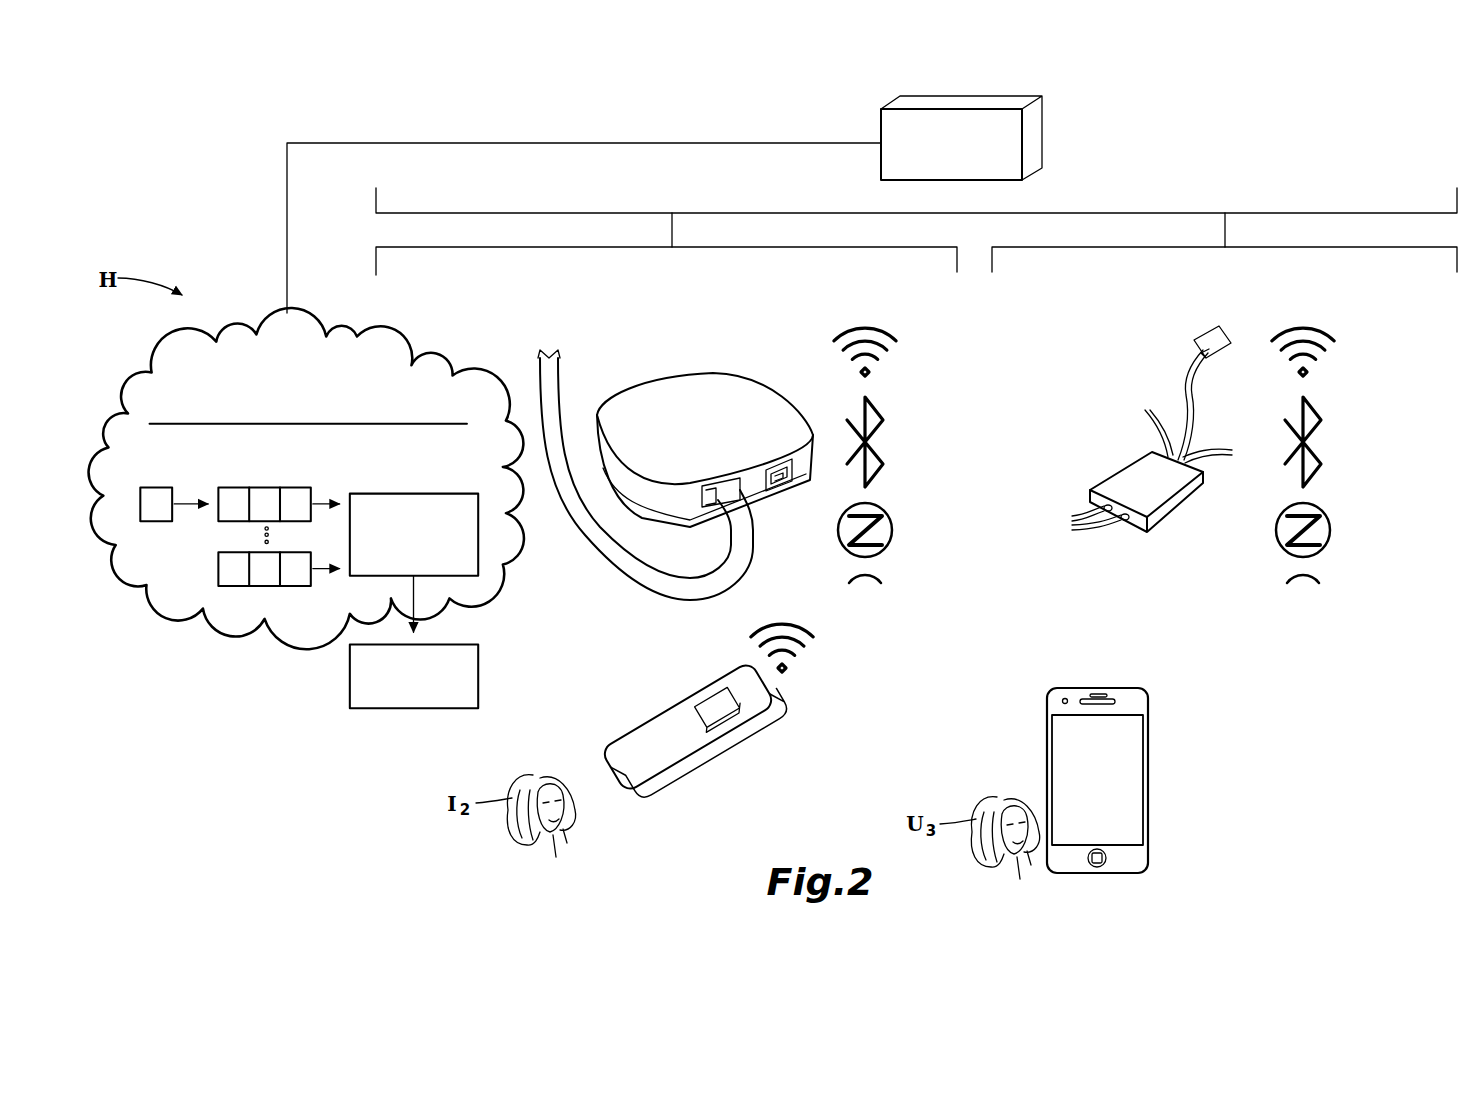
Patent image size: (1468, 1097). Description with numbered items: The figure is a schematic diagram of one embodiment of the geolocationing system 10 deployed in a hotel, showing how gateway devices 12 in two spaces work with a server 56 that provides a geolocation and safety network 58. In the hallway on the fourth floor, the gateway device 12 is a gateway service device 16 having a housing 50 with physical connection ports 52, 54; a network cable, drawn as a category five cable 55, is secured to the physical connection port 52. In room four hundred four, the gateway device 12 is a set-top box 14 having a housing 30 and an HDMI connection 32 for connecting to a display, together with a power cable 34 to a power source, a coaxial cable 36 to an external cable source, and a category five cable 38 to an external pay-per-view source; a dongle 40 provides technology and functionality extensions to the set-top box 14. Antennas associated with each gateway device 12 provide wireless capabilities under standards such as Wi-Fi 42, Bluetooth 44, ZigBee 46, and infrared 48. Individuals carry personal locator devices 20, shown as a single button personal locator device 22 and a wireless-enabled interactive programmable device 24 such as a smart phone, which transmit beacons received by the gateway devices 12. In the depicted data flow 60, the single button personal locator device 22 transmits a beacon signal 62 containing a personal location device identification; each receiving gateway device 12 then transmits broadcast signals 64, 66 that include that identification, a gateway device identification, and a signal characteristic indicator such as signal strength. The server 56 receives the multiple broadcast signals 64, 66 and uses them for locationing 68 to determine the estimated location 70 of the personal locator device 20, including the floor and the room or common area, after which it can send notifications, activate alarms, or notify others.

The system 10 is at (1268, 184).
The gateway device 12 is at (878, 439).
The set-top box 14 is at (1108, 466).
The gateway service device 16 is at (724, 364).
The personal locator device 20 is at (962, 775).
The single button personal locator device 22 is at (681, 789).
The wireless-enabled interactive programmable device 24 is at (1160, 815).
The housing 30 is at (1144, 439).
The HDMI connection 32 is at (1098, 536).
The power cable 34 is at (1082, 530).
The coaxial cable 36 is at (1152, 416).
The category five (Cat 5) cable 38 is at (1212, 446).
The dongle 40 is at (1212, 339).
The Wi-Fi 42 is at (886, 356).
The Bluetooth 44 is at (884, 436).
The ZigBee 46 is at (892, 530).
The infrared 48 is at (884, 598).
The housing 50 is at (705, 429).
The physical connection port 52 is at (718, 482).
The physical connection port 54 is at (782, 489).
The network cable 55 is at (600, 558).
The server 56 is at (1030, 138).
The geolocation and safety network 58 is at (402, 340).
The data flow 60 is at (309, 513).
The beacon signal 62 is at (156, 481).
The broadcast signal 64 is at (258, 481).
The broadcast signal 66 is at (214, 564).
The locationing 68 is at (414, 487).
The estimated location 70 is at (468, 667).